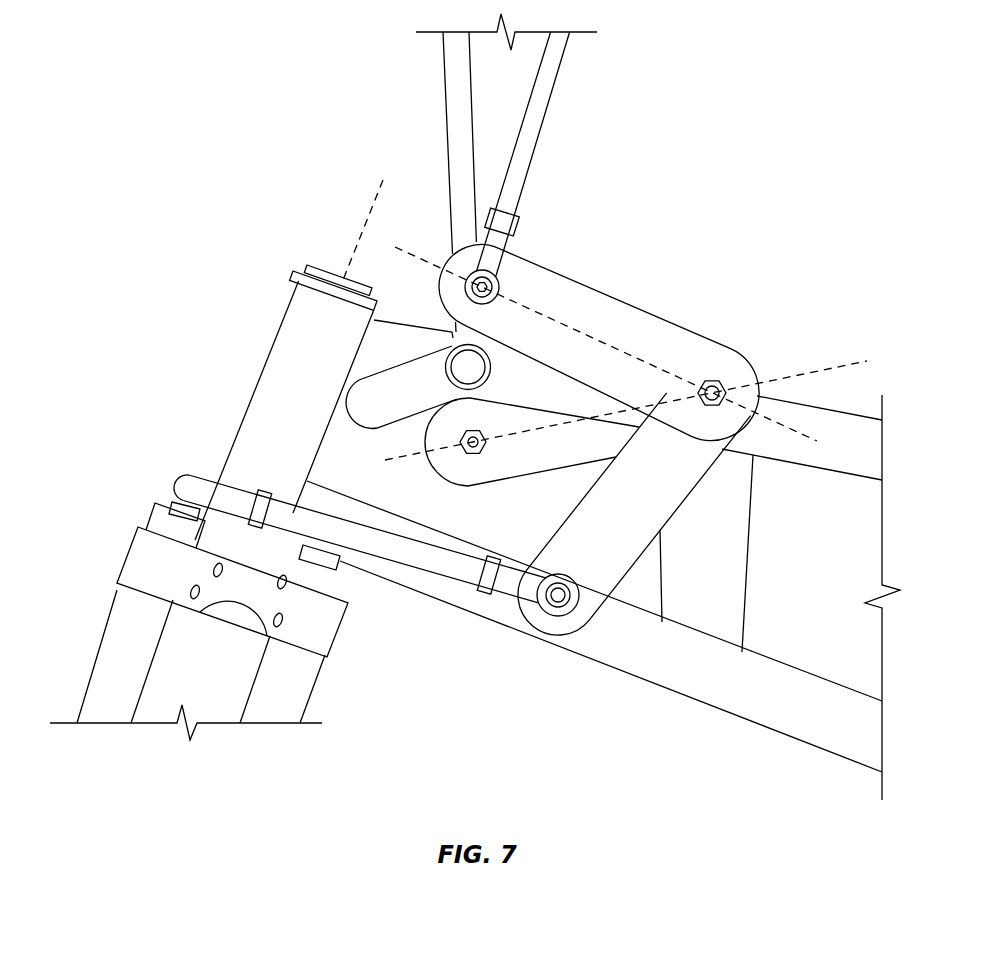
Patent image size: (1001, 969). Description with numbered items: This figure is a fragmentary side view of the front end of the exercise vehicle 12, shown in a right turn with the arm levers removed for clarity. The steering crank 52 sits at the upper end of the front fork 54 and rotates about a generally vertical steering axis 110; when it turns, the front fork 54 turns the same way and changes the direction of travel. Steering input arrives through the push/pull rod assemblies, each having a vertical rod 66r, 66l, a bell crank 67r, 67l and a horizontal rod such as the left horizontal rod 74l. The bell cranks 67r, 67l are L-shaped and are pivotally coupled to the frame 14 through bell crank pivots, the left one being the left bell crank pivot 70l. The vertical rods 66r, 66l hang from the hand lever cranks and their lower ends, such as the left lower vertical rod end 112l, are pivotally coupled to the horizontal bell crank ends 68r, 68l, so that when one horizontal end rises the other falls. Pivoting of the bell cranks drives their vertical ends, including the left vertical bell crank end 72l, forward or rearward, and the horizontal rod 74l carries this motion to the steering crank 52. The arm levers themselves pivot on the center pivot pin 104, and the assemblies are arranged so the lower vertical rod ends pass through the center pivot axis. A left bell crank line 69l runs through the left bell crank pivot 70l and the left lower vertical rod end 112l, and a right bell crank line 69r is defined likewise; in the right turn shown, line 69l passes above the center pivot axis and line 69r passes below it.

The bicycle frame assembly 12 is at (777, 190).
The frame 14 is at (812, 402).
The steering crank 52 is at (128, 550).
The front fork 54 is at (168, 630).
The right vertical rod 66r is at (445, 107).
The left vertical rod 66l is at (553, 97).
The left bell crank 67l is at (645, 297).
The right bell crank 67r is at (758, 525).
The left horizontal bell crank end 68l is at (468, 288).
The right horizontal bell crank end 68r is at (478, 456).
The left bell crank line 69l is at (797, 438).
The right bell crank line 69r is at (797, 372).
The left bell crank pivot 70l is at (716, 386).
The left vertical bell crank end 72l is at (557, 604).
The left horizontal rod 74l is at (422, 565).
The center pivot pin 104 is at (492, 375).
The steering axis 110 is at (355, 230).
The left lower vertical rod end 112l is at (490, 285).